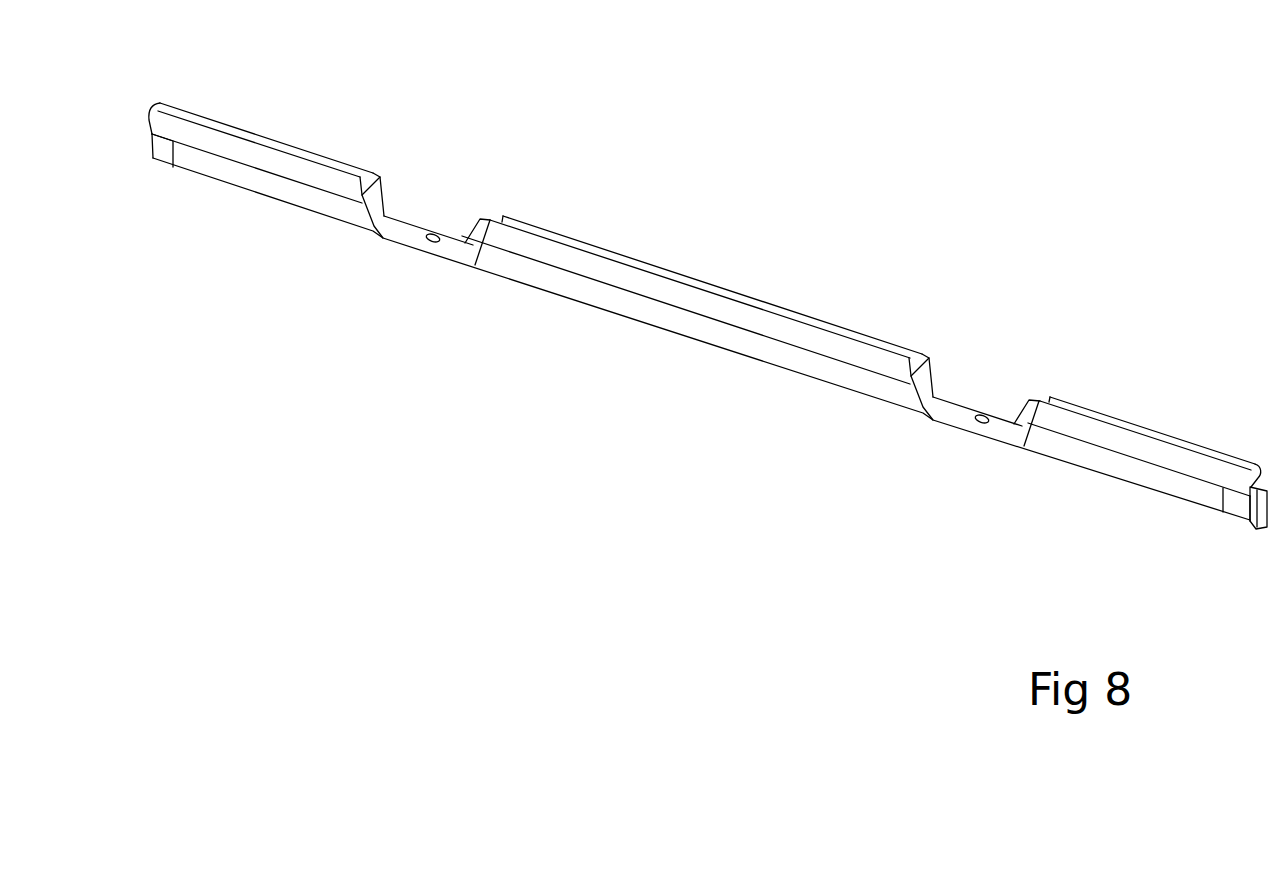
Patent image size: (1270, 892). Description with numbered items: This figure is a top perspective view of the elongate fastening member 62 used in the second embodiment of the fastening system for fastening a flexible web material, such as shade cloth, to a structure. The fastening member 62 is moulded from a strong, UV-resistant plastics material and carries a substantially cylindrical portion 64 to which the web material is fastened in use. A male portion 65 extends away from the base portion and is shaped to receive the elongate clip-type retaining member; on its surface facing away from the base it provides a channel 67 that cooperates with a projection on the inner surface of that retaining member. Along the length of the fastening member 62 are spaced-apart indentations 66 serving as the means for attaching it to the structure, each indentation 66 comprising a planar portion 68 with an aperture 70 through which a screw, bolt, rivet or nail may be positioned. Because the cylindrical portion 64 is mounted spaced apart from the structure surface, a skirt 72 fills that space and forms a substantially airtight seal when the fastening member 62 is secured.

The elongate fastening member 62 is at (708, 299).
The substantially cylindrical portion 64 is at (285, 142).
The male portion 65 is at (604, 215).
The indentations 66 is at (458, 196).
The channel 67 is at (571, 309).
The planar portion 68 is at (458, 243).
The aperture 70 is at (412, 234).
The skirt 72 is at (265, 182).